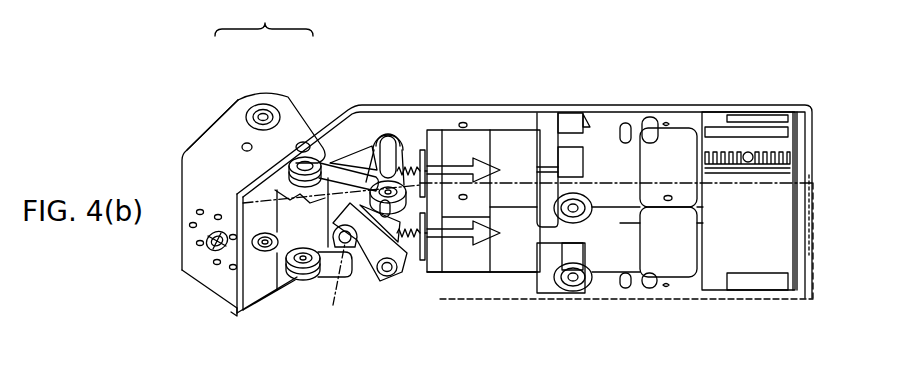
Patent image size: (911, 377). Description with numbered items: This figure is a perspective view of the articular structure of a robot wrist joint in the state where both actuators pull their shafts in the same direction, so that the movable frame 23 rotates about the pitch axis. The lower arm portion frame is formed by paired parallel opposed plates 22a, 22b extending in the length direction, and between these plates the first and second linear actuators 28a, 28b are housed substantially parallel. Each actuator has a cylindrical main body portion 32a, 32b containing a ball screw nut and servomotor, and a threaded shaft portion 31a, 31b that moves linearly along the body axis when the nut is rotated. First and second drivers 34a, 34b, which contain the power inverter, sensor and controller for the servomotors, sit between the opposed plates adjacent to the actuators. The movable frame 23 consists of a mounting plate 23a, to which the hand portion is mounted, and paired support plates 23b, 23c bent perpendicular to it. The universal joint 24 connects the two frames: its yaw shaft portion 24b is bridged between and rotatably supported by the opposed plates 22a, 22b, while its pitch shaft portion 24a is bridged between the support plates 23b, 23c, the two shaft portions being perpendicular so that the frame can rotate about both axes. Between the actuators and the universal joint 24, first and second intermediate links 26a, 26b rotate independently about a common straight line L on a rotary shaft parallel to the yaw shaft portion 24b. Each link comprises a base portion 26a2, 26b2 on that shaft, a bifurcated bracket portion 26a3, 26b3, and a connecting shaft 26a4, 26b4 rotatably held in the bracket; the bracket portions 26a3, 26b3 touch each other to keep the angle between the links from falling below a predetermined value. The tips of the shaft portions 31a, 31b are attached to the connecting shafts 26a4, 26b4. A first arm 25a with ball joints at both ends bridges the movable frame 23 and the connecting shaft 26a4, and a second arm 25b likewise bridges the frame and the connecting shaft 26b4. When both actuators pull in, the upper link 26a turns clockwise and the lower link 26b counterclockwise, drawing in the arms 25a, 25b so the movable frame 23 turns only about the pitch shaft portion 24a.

The opposed plate 22a is at (505, 118).
The opposed plate 22b is at (495, 288).
The movable frame 23 is at (190, 148).
The mounting plate 23a is at (193, 266).
The support plate 23b is at (223, 133).
The support plate 23c is at (240, 316).
The universal joint 24 is at (270, 190).
The pitch shaft portion 24a is at (260, 105).
The yaw shaft portion 24b is at (283, 160).
The first arm 25a is at (327, 130).
The second arm 25b is at (313, 280).
The first intermediate link 26a is at (376, 135).
The base portion 26a2 is at (346, 158).
The bracket portion 26a3 is at (392, 128).
The connecting shaft 26a4 is at (398, 150).
The second intermediate link 26b is at (370, 253).
The base portion 26b2 is at (350, 258).
The bracket portion 26b3 is at (390, 276).
The connecting shaft 26b4 is at (407, 267).
The first linear actuator 28a is at (517, 140).
The second linear actuator 28b is at (510, 262).
The shaft portion 31a is at (410, 168).
The shaft portion 31b is at (462, 275).
The main body portion 32a is at (610, 136).
The main body portion 32b is at (613, 265).
The first driver 34a is at (735, 118).
The second driver 34b is at (750, 150).
The straight line L is at (338, 290).